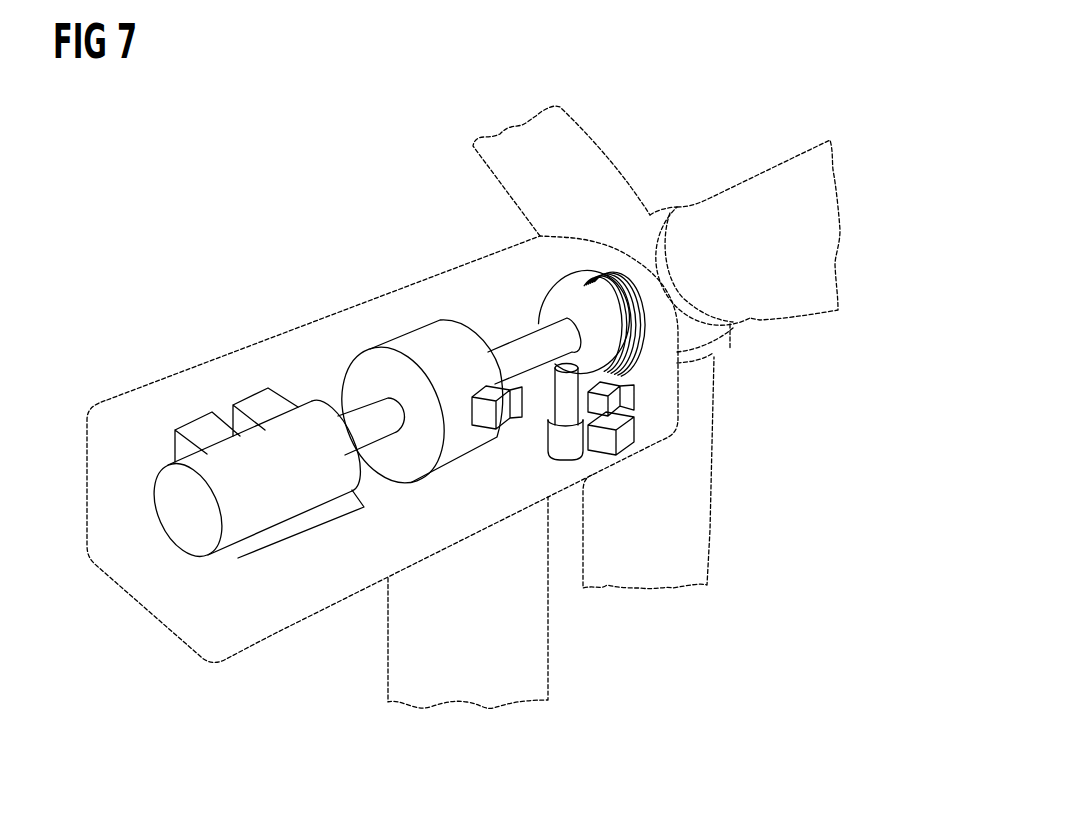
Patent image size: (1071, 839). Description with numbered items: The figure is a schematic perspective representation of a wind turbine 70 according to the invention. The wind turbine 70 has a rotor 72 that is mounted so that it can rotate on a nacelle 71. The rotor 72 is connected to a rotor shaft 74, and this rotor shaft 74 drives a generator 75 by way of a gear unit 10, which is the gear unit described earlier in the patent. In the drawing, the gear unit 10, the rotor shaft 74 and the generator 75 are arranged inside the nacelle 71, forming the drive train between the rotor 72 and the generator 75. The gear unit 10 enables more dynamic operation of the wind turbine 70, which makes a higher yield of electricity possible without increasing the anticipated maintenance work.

The wind turbine 70 is at (268, 283).
The nacelle 71 is at (220, 357).
The rotor 72 is at (712, 510).
The gear unit 10 is at (408, 344).
The rotor shaft 74 is at (532, 347).
The generator 75 is at (180, 525).